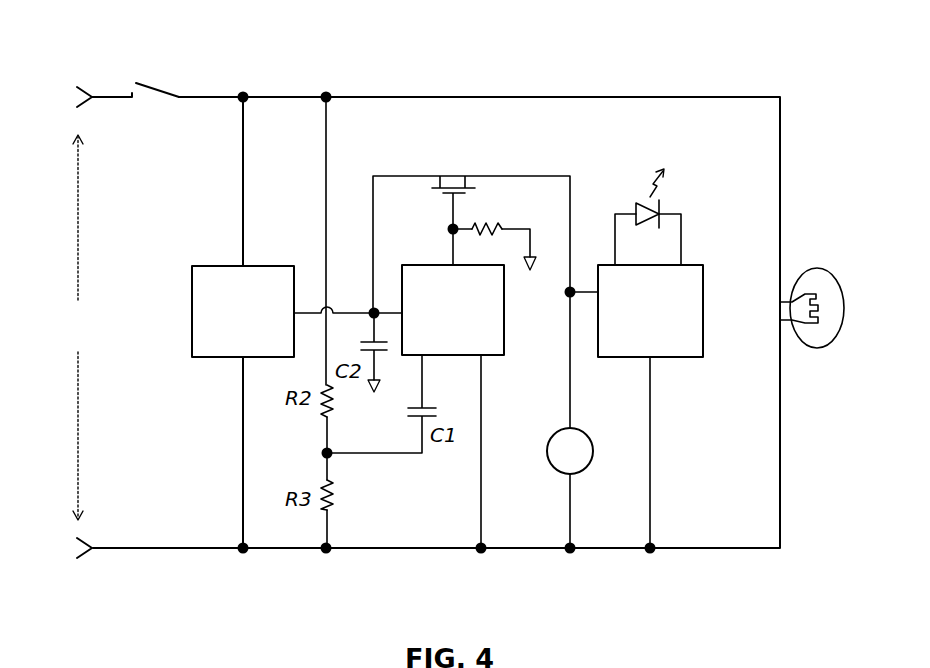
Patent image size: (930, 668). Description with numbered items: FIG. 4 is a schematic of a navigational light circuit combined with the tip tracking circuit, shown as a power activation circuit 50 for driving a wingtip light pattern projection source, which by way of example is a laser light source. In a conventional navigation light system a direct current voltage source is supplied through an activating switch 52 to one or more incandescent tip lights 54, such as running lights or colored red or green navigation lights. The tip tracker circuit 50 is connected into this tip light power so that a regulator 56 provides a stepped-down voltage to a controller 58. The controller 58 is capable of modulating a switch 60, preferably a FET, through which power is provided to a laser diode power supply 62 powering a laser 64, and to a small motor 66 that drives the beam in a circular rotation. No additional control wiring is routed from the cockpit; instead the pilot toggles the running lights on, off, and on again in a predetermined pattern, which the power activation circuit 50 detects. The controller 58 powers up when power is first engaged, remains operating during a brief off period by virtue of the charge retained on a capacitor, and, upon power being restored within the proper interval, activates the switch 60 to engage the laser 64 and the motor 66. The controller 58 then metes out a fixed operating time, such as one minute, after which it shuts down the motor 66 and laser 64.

The power activation circuit 50 is at (773, 50).
The activating switch 52 is at (157, 85).
The incandescent tip light 54 is at (817, 268).
The regulator 56 is at (206, 265).
The controller 58 is at (504, 313).
The switch 60 is at (452, 174).
The laser diode power supply 62 is at (703, 306).
The laser 64 is at (640, 200).
The motor 66 is at (578, 430).